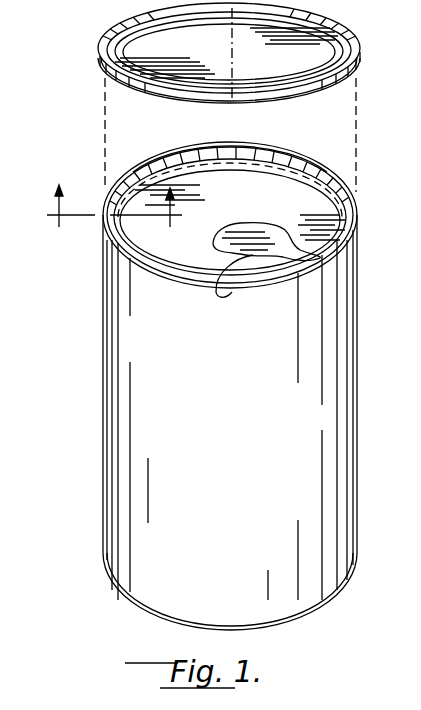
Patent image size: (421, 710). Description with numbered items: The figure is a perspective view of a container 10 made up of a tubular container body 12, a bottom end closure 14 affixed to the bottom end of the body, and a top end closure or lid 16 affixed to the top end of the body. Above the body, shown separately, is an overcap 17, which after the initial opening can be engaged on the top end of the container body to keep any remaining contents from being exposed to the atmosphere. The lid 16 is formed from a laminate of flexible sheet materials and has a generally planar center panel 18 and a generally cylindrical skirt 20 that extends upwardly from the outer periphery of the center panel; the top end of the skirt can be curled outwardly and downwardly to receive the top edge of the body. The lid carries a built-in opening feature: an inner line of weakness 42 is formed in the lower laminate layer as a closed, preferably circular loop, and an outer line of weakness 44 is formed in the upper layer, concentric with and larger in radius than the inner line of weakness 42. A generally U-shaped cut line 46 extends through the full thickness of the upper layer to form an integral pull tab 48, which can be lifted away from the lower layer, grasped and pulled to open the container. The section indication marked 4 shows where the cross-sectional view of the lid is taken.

The container 10 is at (100, 343).
The tubular container body 12 is at (252, 430).
The bottom end closure 14 is at (136, 606).
The lid 16 is at (155, 166).
The overcap 17 is at (303, 67).
The center panel 18 is at (236, 209).
The skirt 20 is at (237, 163).
The inner line of weakness 42 is at (190, 167).
The outer line of weakness 44 is at (280, 160).
The cut line 46 is at (282, 229).
The pull tab 48 is at (234, 289).
The section line 4- 4 is at (114, 223).